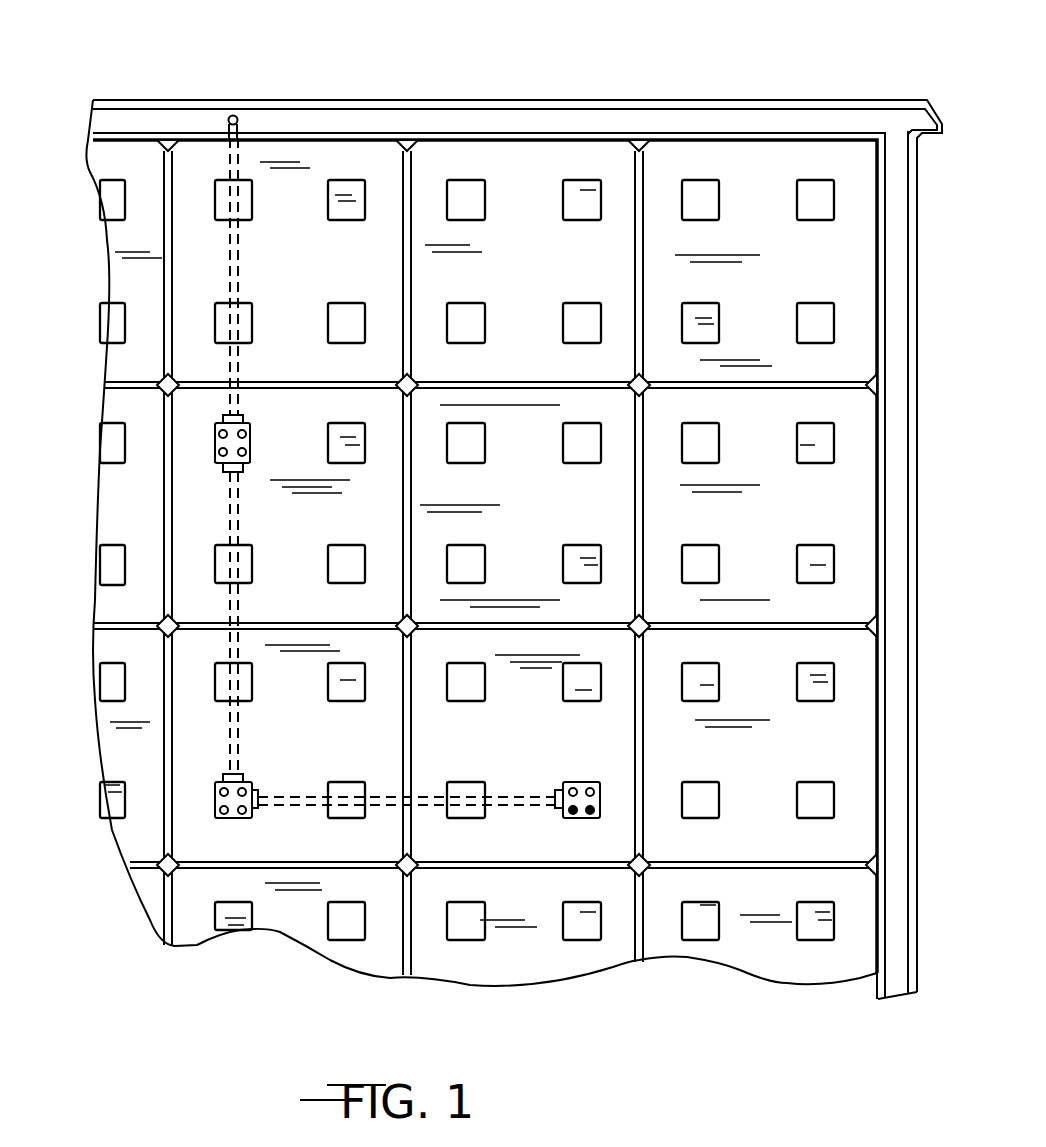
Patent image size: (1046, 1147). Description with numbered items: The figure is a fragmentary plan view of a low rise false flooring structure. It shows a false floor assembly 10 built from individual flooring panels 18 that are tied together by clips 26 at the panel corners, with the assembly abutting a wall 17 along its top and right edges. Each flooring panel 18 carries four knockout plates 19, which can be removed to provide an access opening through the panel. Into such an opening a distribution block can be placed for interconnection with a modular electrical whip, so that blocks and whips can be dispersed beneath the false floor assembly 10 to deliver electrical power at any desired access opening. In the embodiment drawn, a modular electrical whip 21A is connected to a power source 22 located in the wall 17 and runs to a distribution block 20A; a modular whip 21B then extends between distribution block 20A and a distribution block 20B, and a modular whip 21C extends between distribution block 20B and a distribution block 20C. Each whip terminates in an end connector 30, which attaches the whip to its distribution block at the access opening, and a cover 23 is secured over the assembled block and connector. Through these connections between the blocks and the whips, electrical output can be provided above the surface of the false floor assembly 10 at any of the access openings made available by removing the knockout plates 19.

The false floor assembly 10 is at (478, 80).
The wall 17 is at (617, 128).
The flooring panel 18 is at (548, 272).
The knockout plate 19 is at (583, 545).
The distribution block 20A is at (290, 428).
The distribution block 20B is at (262, 781).
The distribution block 20C is at (558, 780).
The modular electrical whip 21A is at (240, 252).
The modular electrical whip 21B is at (240, 622).
The modular electrical whip 21C is at (428, 795).
The power source 22 is at (248, 126).
The cover 23 is at (214, 464).
The clip 26 is at (662, 618).
The end connector 30 is at (258, 810).